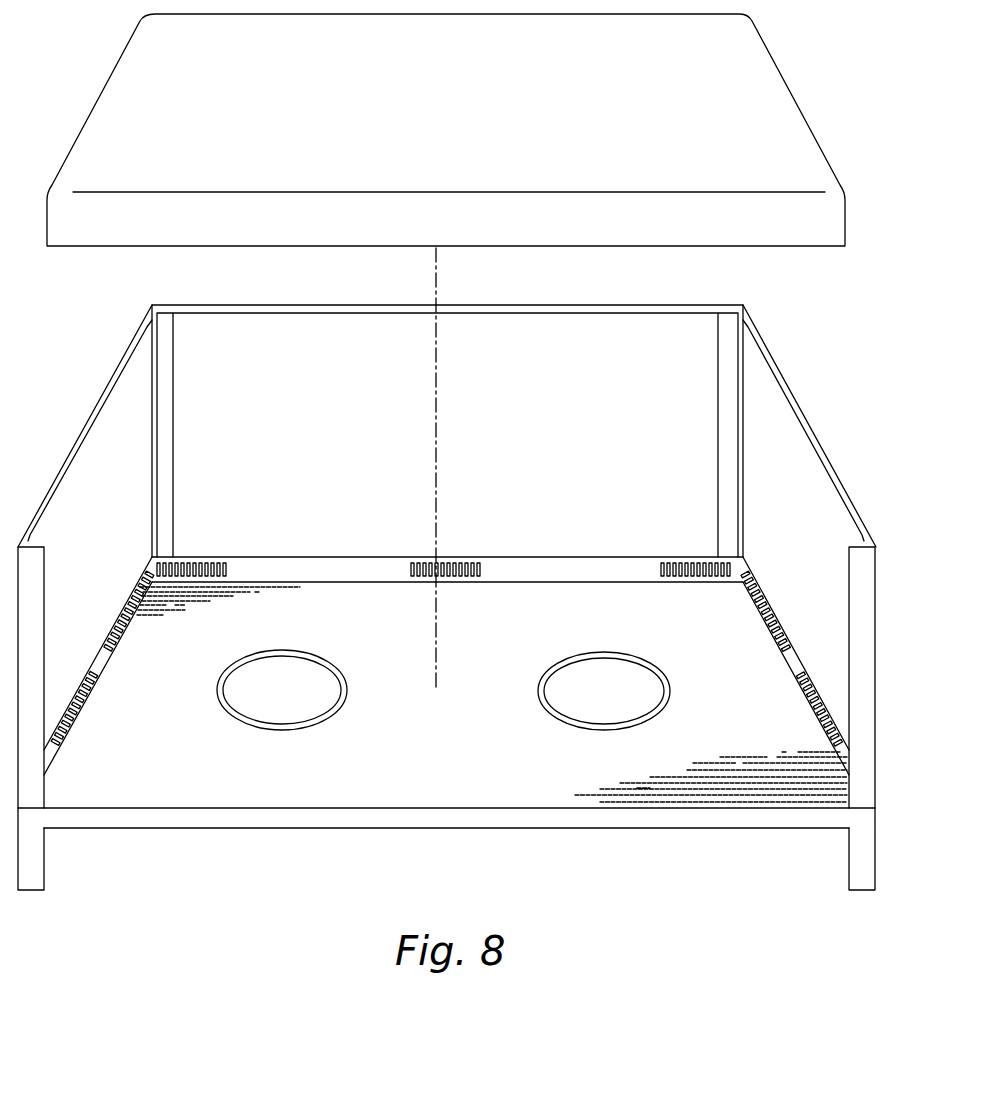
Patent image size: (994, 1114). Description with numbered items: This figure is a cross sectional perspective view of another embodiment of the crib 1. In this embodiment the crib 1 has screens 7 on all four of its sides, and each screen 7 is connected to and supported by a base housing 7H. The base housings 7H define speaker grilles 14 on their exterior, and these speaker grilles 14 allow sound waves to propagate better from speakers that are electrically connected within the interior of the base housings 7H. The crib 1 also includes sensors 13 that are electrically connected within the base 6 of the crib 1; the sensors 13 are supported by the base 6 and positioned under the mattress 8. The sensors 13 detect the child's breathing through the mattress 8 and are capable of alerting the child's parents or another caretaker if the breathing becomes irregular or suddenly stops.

The crib 1 is at (50, 395).
The mattress 8 is at (812, 128).
The screen 7 is at (877, 628).
The base housing 7H is at (778, 612).
The base 6 is at (362, 828).
The sensor 13 is at (233, 717).
The speaker grille 14 is at (808, 705).